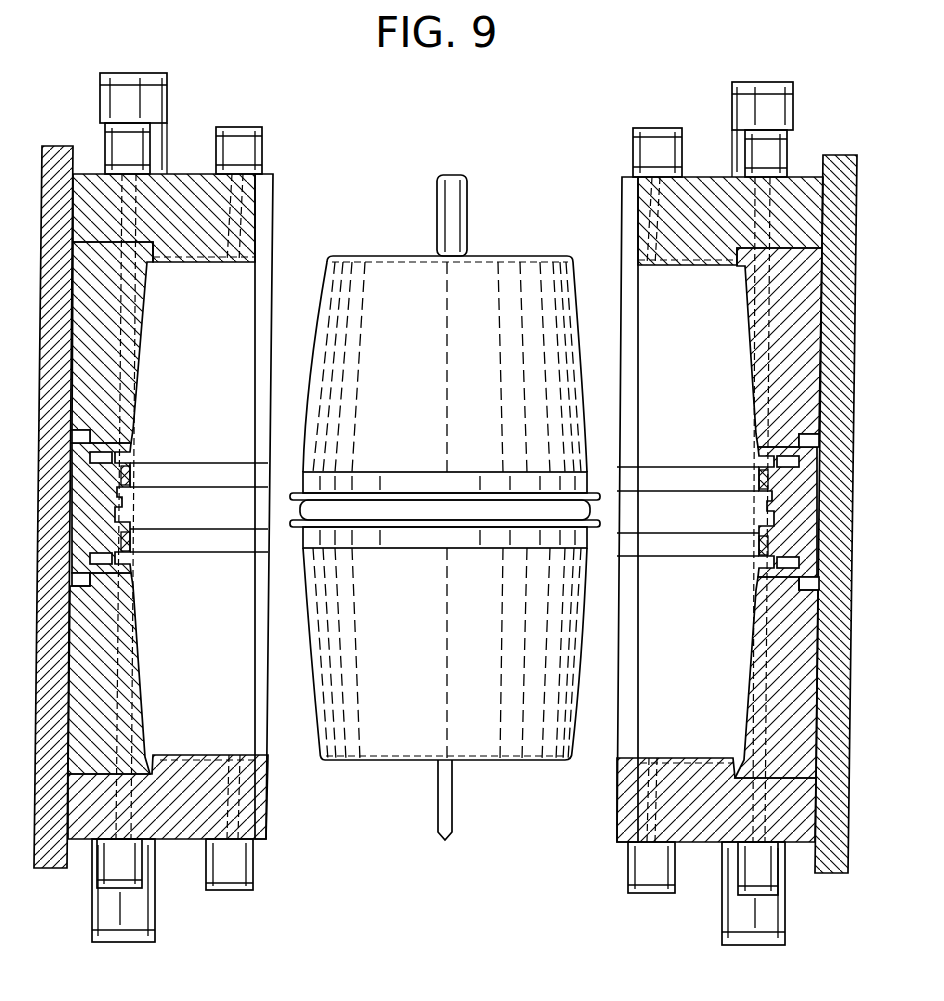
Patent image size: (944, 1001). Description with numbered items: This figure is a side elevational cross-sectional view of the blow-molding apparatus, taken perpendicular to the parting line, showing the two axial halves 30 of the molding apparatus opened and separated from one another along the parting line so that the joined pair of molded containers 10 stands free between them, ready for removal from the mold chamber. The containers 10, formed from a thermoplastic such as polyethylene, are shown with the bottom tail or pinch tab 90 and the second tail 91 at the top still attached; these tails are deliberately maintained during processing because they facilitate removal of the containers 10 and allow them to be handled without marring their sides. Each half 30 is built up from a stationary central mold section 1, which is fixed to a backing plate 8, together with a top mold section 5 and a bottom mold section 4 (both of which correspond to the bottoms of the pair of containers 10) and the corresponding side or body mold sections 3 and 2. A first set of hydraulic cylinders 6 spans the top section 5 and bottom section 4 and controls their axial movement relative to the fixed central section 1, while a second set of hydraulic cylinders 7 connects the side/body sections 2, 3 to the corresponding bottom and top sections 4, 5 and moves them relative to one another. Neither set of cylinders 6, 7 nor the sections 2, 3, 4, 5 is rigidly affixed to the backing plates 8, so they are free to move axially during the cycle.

The stationary central mold section 1 is at (113, 510).
The side or body mold section 2 is at (110, 688).
The side or body mold section 3 is at (130, 328).
The bottom mold section 4 is at (187, 833).
The top mold section 5 is at (193, 173).
The first set of hydraulic cylinders 6 is at (145, 72).
The second set of hydraulic cylinders 7 is at (165, 118).
The backing plate 8 is at (60, 146).
The container 10 is at (553, 263).
The axial half of the molding apparatus 30 is at (287, 206).
The tail or pinch tab 90 is at (437, 818).
The second tail 91 is at (435, 178).